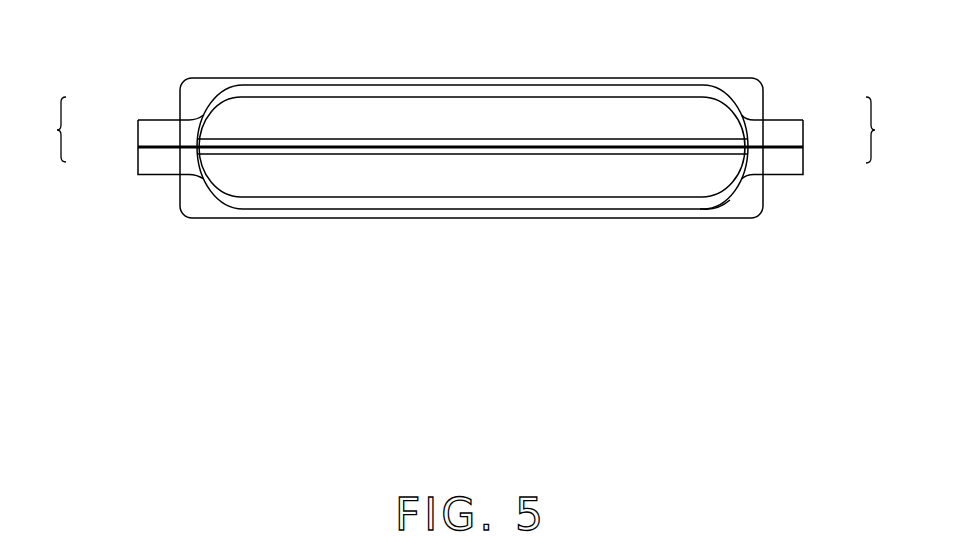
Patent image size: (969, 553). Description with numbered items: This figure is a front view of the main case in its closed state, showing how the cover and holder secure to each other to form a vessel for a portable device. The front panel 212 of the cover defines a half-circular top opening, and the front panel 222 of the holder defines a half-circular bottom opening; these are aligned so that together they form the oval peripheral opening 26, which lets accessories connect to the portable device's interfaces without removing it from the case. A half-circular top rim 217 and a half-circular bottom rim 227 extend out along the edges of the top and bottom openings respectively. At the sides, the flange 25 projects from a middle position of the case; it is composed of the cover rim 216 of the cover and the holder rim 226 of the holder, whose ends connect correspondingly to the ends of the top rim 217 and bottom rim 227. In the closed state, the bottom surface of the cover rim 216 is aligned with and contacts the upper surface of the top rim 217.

The front panel 212 is at (737, 83).
The front panel 222 is at (747, 202).
The half-circular top rim 217 is at (605, 90).
The half-circular bottom rim 227 is at (470, 198).
The peripheral opening 26 is at (680, 177).
The cover rim 216 is at (157, 135).
The holder rim 226 is at (157, 160).
The flange 25 is at (466, 130).